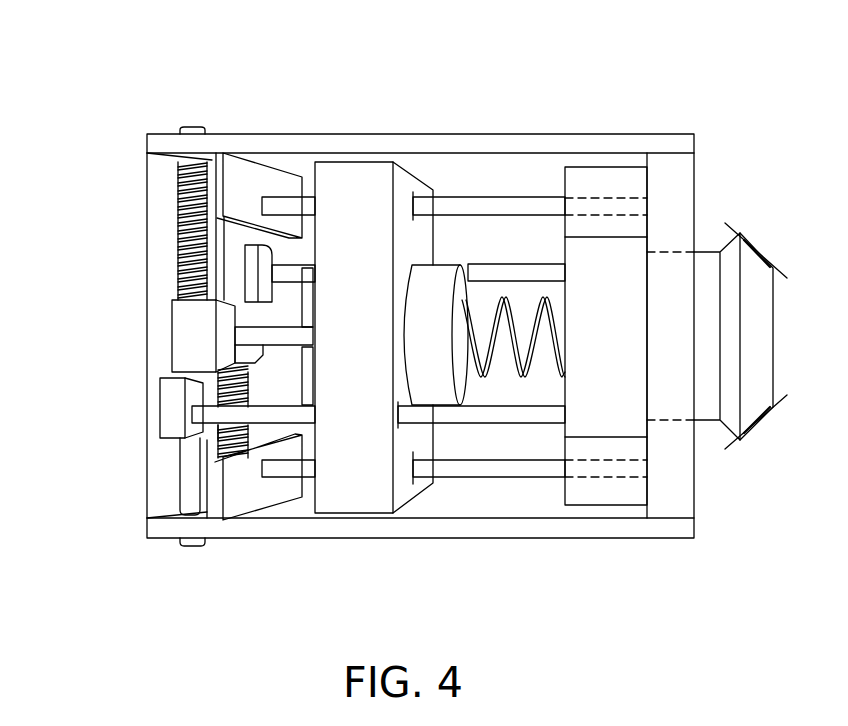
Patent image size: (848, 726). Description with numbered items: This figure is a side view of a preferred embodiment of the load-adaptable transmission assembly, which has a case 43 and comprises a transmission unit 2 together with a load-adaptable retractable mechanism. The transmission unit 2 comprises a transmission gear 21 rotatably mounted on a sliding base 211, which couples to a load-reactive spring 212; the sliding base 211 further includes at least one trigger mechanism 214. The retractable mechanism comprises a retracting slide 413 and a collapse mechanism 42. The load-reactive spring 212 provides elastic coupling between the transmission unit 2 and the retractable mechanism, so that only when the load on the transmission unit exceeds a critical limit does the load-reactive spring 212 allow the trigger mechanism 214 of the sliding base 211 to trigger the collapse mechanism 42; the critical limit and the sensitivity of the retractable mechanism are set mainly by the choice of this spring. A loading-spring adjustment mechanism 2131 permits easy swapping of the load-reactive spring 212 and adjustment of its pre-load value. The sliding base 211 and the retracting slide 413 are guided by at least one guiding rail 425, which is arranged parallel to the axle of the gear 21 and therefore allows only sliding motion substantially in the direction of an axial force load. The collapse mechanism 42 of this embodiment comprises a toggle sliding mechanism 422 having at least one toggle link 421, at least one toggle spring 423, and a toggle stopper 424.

The transmission unit 2 is at (760, 80).
The transmission gear 21 is at (758, 243).
The sliding base 211 is at (600, 183).
The load-reactive spring 212 is at (502, 297).
The loading-spring adjustment mechanism 2131 is at (433, 283).
The trigger mechanism 214 is at (527, 417).
The retracting slide 413 is at (355, 197).
The collapse mechanism 42 is at (74, 228).
The toggle link 421 is at (247, 337).
The toggle sliding mechanism 422 is at (188, 312).
The toggle spring 423 is at (177, 223).
The toggle stopper 424 is at (172, 400).
The guiding rail 425 is at (447, 468).
The case 43 is at (677, 486).